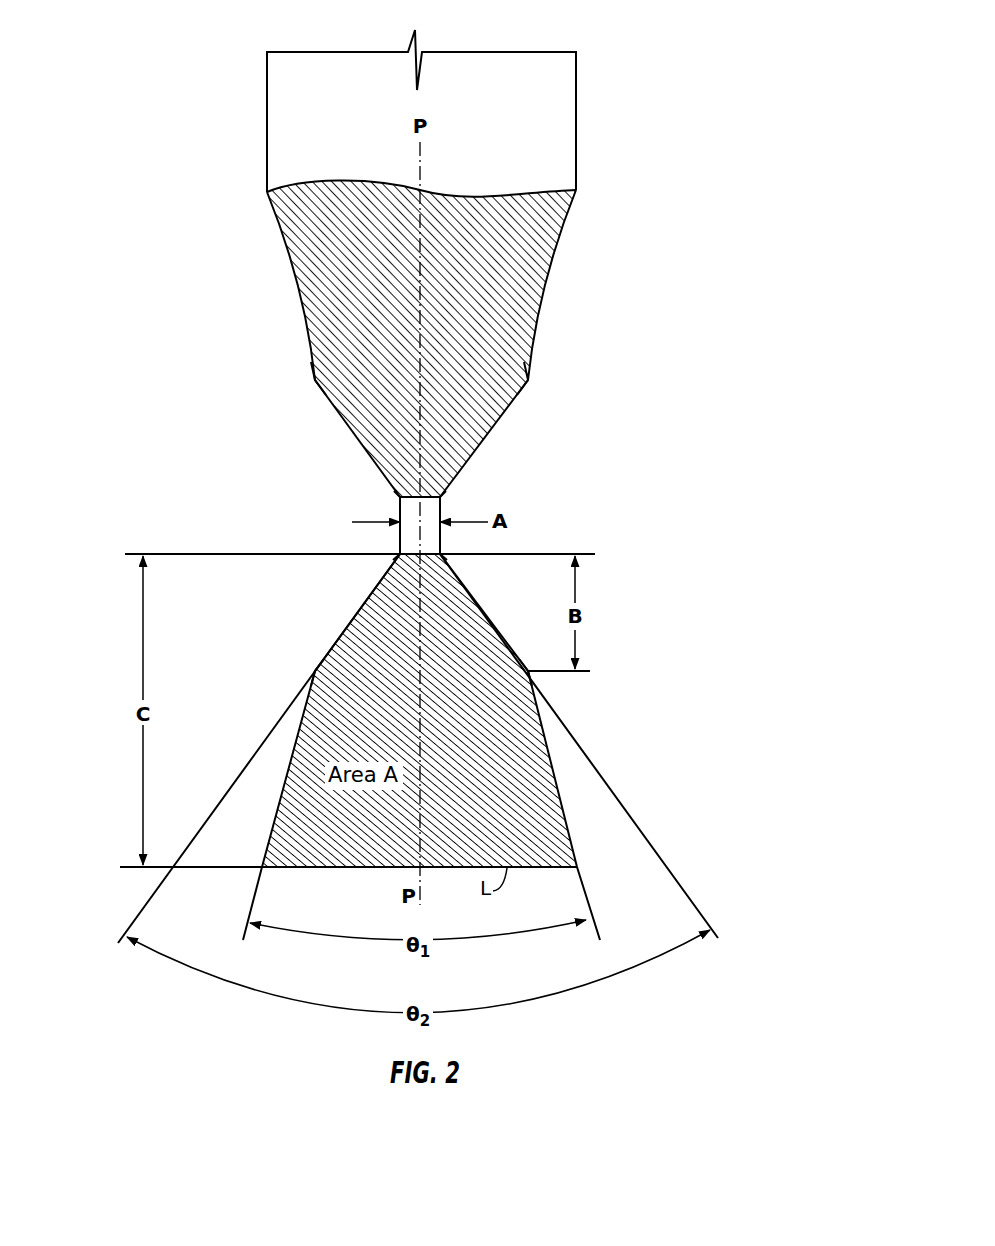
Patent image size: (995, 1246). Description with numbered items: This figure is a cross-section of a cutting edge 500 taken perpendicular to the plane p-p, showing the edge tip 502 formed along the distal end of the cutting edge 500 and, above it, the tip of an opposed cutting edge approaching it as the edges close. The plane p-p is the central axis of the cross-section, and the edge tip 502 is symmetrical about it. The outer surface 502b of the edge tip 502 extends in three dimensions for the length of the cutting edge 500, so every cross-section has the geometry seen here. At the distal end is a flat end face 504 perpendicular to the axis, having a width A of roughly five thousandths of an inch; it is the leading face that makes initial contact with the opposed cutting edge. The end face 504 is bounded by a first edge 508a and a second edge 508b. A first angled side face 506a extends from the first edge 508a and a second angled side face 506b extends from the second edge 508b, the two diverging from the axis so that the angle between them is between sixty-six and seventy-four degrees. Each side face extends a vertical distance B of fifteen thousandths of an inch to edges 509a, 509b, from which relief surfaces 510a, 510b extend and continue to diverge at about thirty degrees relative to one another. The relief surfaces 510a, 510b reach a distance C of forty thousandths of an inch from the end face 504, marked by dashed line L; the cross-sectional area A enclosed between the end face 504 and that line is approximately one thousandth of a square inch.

The cutting edge 500 is at (165, 95).
The edge tip 502 is at (652, 391).
The outer surface of the edge tip 502b is at (565, 228).
The flat end face 504 is at (400, 547).
The first angled side face 506a is at (484, 438).
The second angled side face 506b is at (352, 433).
The first edge 508a is at (440, 497).
The second edge 508b is at (400, 497).
The edge 509a is at (528, 380).
The edge 509b is at (314, 381).
The relief surface 510a is at (541, 303).
The relief surface 510b is at (278, 247).